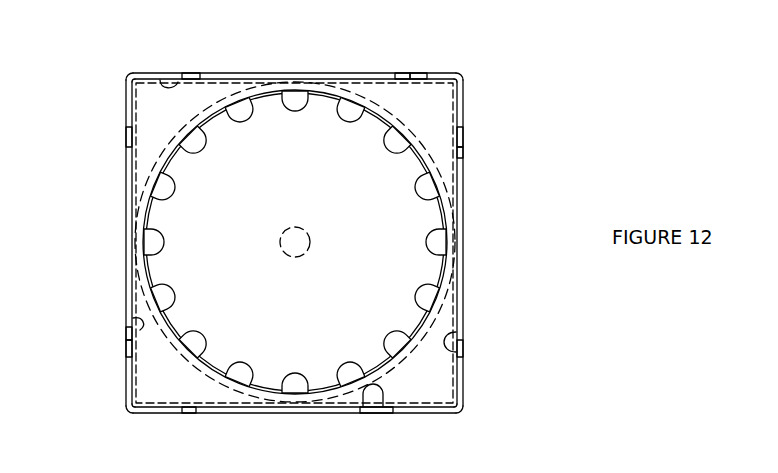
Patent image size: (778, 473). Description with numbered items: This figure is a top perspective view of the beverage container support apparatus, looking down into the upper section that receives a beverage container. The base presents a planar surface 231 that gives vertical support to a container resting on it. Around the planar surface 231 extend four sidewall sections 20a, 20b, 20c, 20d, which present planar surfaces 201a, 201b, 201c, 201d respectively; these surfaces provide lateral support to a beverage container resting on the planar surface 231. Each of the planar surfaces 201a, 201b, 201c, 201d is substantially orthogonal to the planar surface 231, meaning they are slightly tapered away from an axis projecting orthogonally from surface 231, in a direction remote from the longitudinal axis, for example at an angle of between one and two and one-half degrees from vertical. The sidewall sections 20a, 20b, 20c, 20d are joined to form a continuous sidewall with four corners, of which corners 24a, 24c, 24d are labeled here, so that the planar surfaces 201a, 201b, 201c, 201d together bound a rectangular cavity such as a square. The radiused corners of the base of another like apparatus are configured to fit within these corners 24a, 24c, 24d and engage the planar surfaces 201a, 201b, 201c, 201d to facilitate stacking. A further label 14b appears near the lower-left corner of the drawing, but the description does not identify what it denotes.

The planar surface 231 is at (440, 388).
The sidewall section 20a is at (283, 413).
The sidewall section 20b is at (126, 393).
The sidewall section 20c is at (426, 73).
The sidewall section 20d is at (463, 118).
The corner 24a is at (463, 413).
The corner 24c is at (132, 65).
The corner 24d is at (460, 75).
The bottom-left corner 14b is at (126, 410).
The planar surface 201a is at (376, 400).
The planar surface 201b is at (130, 328).
The planar surface 201c is at (160, 80).
The planar surface 201d is at (455, 350).